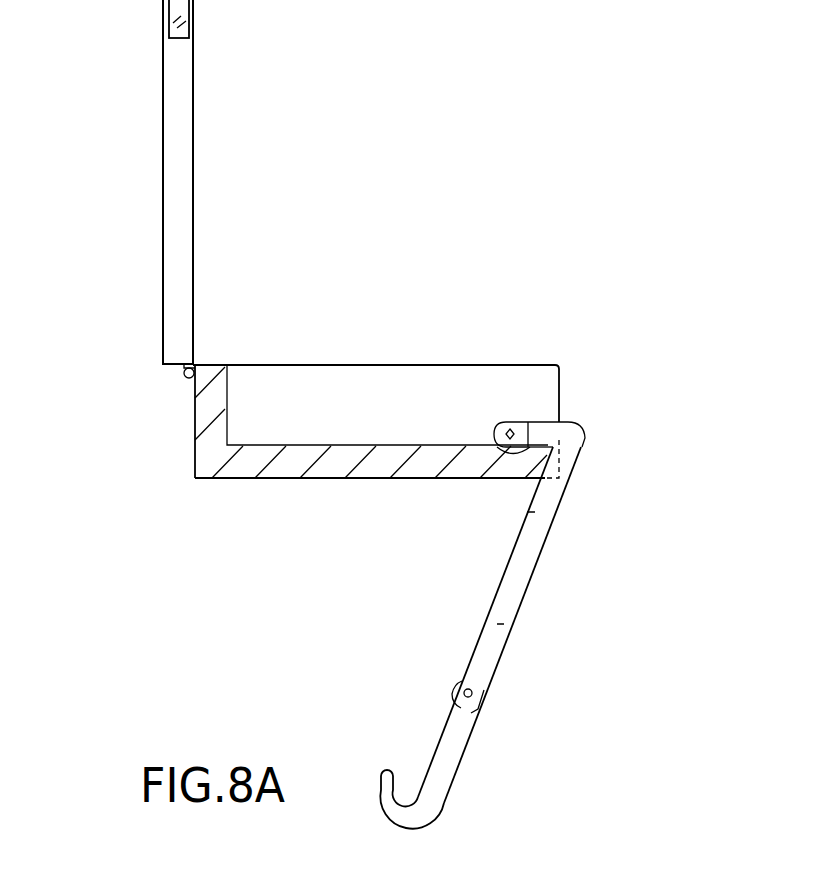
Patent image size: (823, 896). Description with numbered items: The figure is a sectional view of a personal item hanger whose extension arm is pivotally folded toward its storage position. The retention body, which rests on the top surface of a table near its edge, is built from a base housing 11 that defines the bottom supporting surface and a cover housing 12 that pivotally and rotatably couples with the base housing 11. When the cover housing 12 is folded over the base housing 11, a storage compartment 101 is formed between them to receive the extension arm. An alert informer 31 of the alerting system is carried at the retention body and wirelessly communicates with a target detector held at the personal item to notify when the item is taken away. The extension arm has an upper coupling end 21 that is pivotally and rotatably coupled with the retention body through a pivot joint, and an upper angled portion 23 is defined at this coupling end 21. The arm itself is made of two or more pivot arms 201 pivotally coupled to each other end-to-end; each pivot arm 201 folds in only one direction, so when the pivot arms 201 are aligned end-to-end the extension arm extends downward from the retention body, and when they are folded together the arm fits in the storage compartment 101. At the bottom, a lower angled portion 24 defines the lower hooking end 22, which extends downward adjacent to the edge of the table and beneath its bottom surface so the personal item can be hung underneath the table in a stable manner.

The base housing 11 is at (190, 262).
The alert informer 31 is at (178, 12).
The storage compartment 101 is at (376, 360).
The cover housing 12 is at (213, 448).
The upper coupling end 21 is at (511, 415).
The upper angled portion 23 is at (592, 427).
The pivot arm 201 is at (530, 548).
The lower angled portion 24 is at (393, 763).
The lower hooking end 22 is at (438, 811).